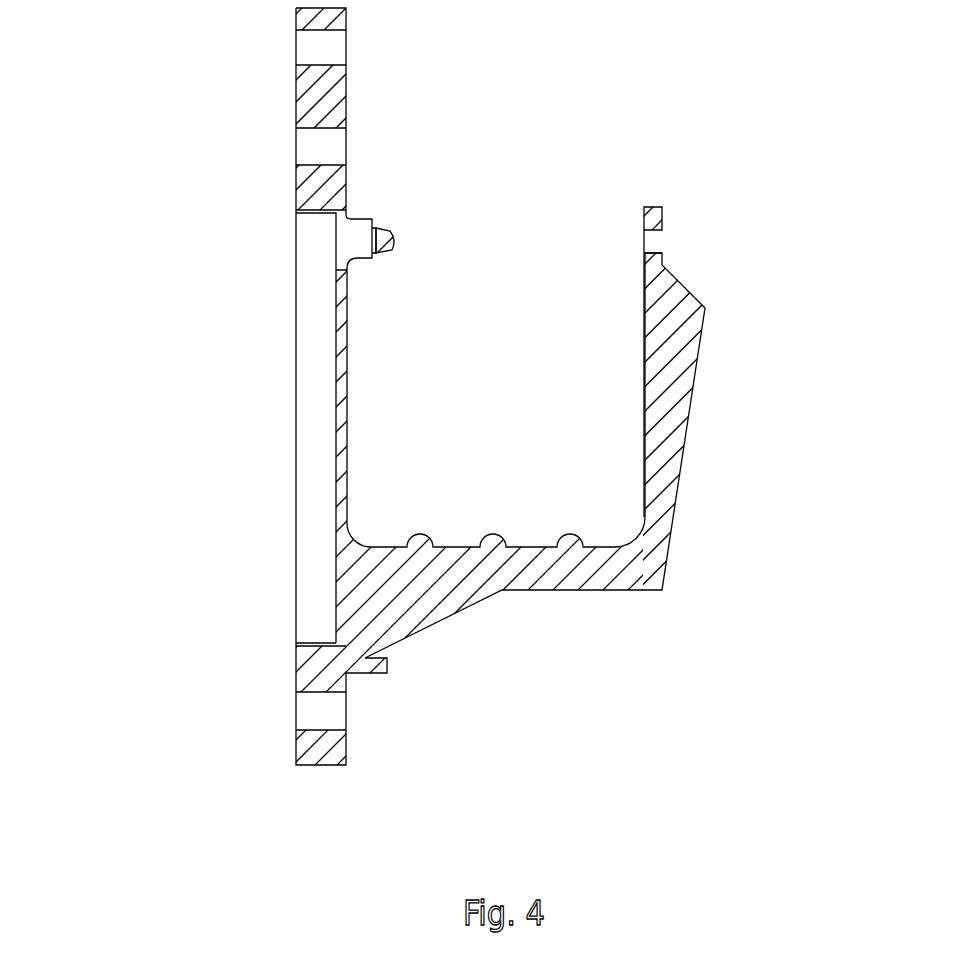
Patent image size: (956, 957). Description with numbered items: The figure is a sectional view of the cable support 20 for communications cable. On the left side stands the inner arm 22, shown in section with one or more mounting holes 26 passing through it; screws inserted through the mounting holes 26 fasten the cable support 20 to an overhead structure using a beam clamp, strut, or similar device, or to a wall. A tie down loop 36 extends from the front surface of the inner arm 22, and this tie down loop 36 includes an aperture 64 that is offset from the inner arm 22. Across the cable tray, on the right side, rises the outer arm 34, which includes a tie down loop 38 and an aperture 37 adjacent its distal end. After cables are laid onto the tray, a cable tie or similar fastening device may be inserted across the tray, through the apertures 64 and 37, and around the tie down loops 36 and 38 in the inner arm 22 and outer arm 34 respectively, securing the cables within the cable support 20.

The cable support 20 is at (193, 261).
The inner arm 22 is at (296, 100).
The mounting holes 26 is at (333, 50).
The outer arm 34 is at (683, 440).
The tie down loop 36 is at (398, 240).
The aperture 37 is at (653, 243).
The tie down loop 38 is at (662, 215).
The aperture 64 is at (362, 233).